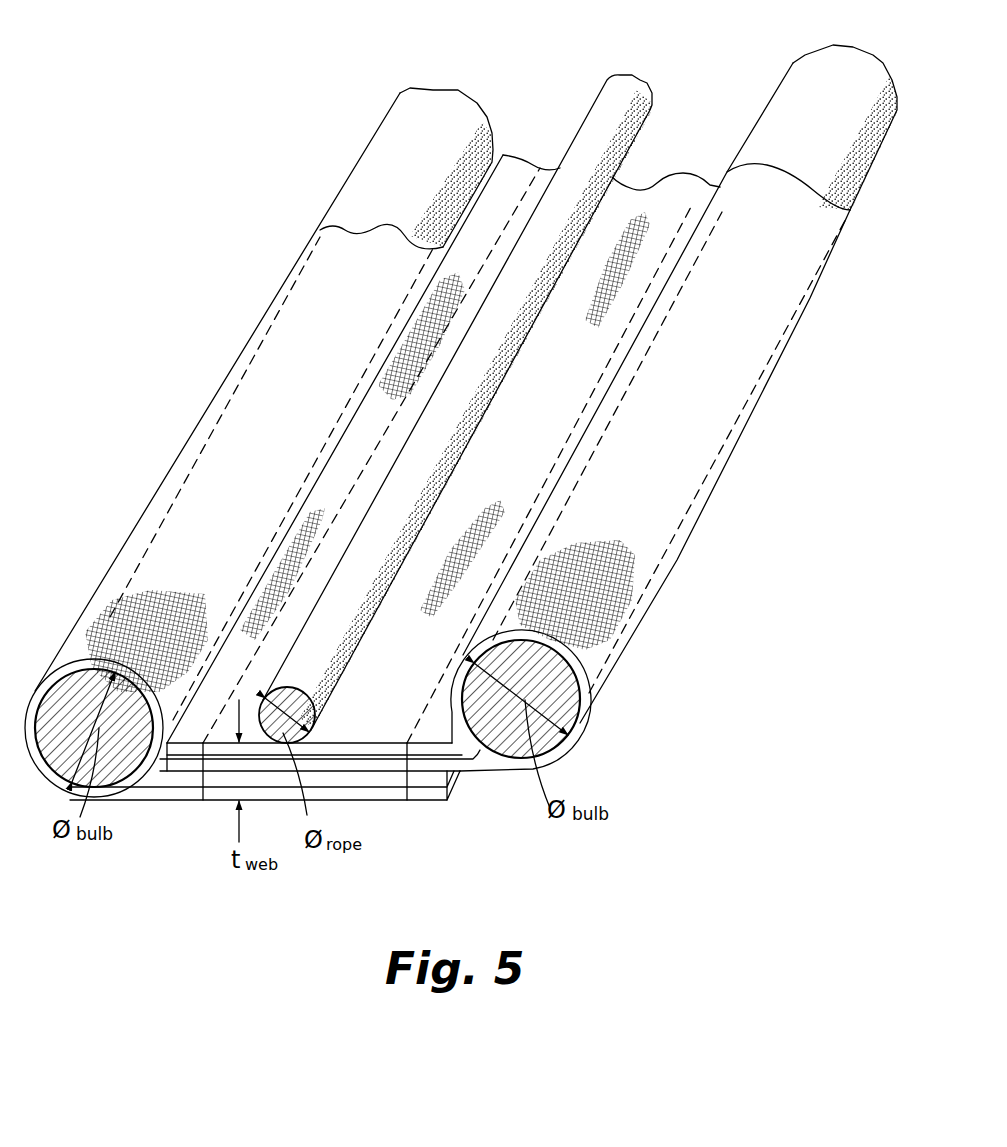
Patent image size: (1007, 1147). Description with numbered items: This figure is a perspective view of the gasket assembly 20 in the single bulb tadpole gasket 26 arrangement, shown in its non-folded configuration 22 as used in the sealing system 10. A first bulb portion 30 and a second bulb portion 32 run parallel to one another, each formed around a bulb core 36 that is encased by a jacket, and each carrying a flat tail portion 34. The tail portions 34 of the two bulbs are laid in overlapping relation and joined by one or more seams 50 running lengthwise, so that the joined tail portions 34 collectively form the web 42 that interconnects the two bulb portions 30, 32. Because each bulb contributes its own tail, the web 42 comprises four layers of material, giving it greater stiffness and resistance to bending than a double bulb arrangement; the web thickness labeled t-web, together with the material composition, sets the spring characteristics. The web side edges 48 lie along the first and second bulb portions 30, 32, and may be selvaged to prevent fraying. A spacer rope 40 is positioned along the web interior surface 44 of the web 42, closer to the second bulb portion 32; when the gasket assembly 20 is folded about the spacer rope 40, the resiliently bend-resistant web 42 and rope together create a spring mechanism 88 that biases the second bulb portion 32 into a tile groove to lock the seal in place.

The sealing system 10 is at (222, 66).
The gasket assembly 20 is at (230, 362).
The non-folded configuration 22 is at (217, 392).
The spring mechanism 88 is at (215, 427).
The single bulb tadpole gasket 26 is at (313, 307).
The first bulb portion 30 is at (713, 468).
The second bulb portion 32 is at (168, 474).
The tail portion 34 is at (587, 357).
The bulb core 36 is at (430, 97).
The spacer rope 40 is at (630, 88).
The web 42 is at (628, 359).
The web interior surface 44 is at (675, 188).
The web side edges 48 is at (150, 782).
The seam 50 is at (197, 803).